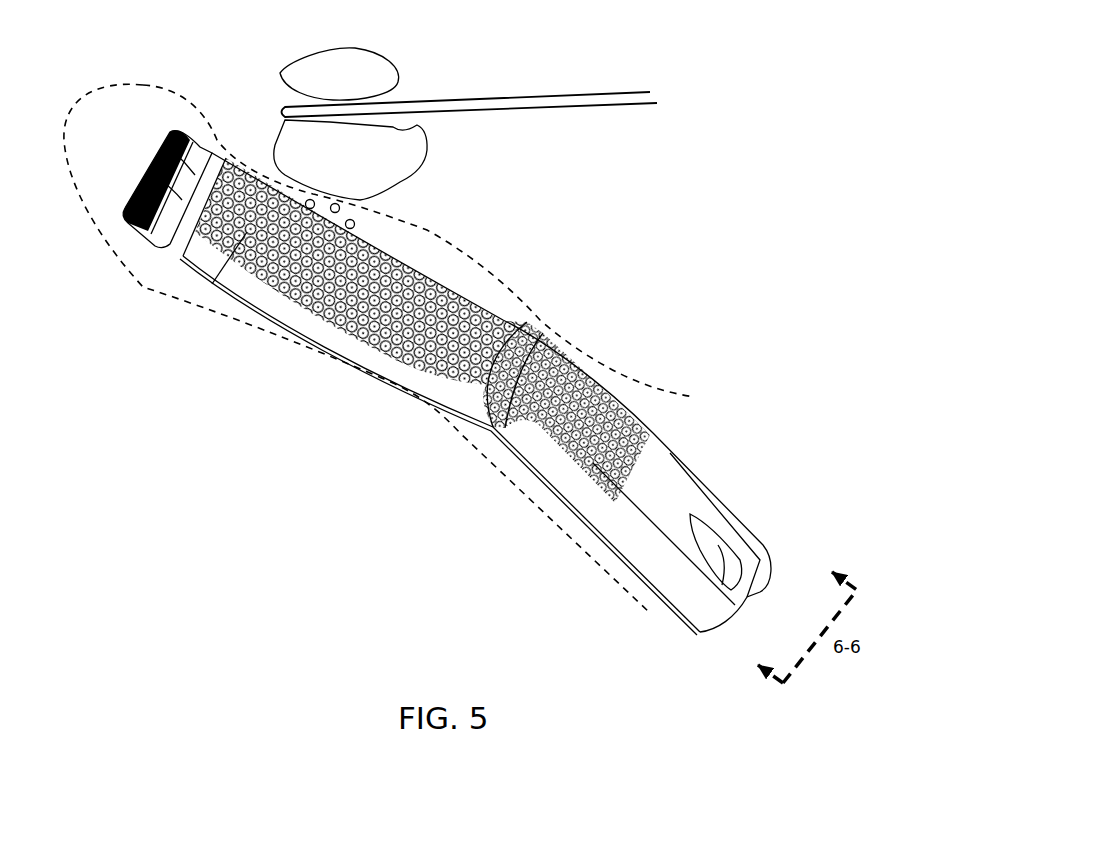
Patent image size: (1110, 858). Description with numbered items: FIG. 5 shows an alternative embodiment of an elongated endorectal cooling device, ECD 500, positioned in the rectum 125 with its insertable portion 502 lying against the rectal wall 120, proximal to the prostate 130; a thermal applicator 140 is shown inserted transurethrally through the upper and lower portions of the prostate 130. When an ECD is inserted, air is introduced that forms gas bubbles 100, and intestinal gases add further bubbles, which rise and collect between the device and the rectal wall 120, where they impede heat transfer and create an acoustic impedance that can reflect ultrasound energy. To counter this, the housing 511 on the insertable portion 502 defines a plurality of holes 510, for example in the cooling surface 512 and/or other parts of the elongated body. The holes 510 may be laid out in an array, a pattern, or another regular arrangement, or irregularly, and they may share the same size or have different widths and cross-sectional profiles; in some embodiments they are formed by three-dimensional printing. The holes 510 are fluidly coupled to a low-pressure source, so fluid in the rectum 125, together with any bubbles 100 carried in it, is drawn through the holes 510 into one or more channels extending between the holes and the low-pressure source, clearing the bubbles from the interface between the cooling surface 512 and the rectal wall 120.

The gas bubbles 100 is at (360, 216).
The rectal wall 120 is at (262, 165).
The rectum 125 is at (117, 188).
The prostate 130 is at (362, 88).
The thermal applicator 140 is at (535, 85).
The elongated ECD 500 is at (685, 513).
The insertable portion 502 is at (158, 128).
The holes 510 is at (228, 182).
The housing 511 is at (263, 320).
The cooling surface 512 is at (370, 240).